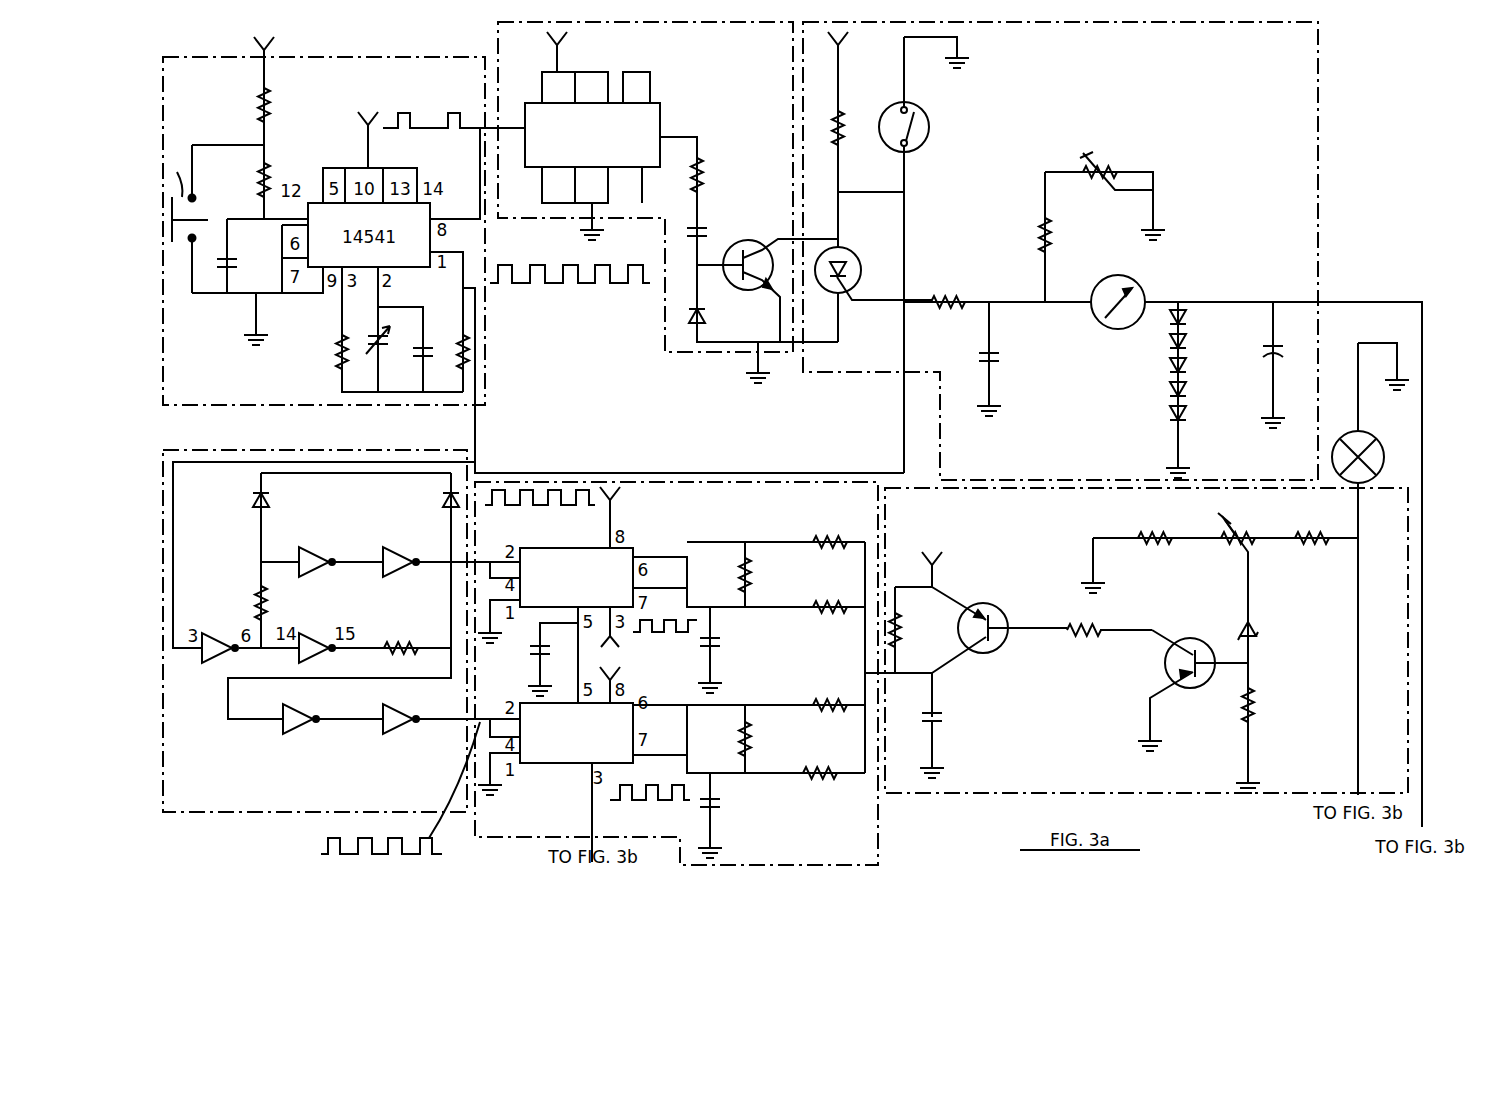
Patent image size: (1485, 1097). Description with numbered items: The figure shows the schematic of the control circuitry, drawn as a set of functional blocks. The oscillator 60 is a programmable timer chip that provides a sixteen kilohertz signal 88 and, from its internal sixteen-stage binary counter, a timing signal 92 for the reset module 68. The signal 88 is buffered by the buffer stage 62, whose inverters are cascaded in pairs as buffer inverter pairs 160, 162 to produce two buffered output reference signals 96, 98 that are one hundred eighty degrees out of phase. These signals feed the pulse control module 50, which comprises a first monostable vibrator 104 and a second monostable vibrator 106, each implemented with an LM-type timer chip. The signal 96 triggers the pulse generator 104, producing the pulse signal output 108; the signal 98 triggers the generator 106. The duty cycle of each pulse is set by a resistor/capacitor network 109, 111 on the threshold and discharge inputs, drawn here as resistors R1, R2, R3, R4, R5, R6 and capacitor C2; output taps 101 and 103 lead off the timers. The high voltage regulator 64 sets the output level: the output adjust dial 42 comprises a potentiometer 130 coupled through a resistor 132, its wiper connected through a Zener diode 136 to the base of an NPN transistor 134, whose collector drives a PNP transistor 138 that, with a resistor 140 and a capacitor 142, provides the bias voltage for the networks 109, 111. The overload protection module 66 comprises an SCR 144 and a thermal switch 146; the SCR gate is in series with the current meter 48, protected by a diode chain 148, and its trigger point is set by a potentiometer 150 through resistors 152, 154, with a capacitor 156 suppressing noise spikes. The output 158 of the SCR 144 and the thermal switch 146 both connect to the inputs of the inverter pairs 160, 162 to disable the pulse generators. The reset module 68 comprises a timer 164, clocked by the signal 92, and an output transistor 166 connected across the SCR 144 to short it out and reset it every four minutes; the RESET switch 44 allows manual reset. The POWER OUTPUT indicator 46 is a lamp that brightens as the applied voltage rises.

The RESET switch 44 is at (214, 219).
The timing signal 92 is at (428, 128).
The timer 164 is at (660, 115).
The output transistor 166 is at (760, 243).
The output of the SCR 158 is at (858, 192).
The SCR 144 is at (852, 258).
The thermal switch 146 is at (917, 150).
The potentiometer 150 is at (1112, 162).
The resistor 152 is at (1050, 247).
The resistor 154 is at (955, 295).
The capacitor 156 is at (992, 330).
The current meter 48 is at (1118, 330).
The diode chain 148 is at (1172, 392).
The overload protection module 66 is at (1318, 125).
The POWER OUTPUT indicator 46 is at (1375, 445).
The oscillator 60 is at (253, 407).
The buffer stage 62 is at (306, 451).
The 16 kHz signal 88 is at (618, 285).
The reset module 68 is at (780, 350).
The pulse control module 50 is at (715, 482).
The buffer inverter pair 160 is at (357, 552).
The buffer inverter pair 162 is at (325, 724).
The buffered output reference signal 98 is at (330, 840).
The buffered output reference signal 96 is at (545, 505).
The resistor/capacitor network 109 is at (657, 546).
The first monostable vibrator 104 is at (648, 588).
The timer output 101 is at (615, 640).
The pulse signal output 108 is at (675, 635).
The resistor/capacitor network 111 is at (641, 712).
The second monostable vibrator 106 is at (560, 765).
The output signal 103 is at (598, 803).
The capacitor C2 is at (718, 808).
The resistor R1 is at (752, 575).
The resistor R2 is at (830, 548).
The resistor R3 is at (835, 613).
The resistor R4 is at (753, 740).
The resistor R5 is at (838, 710).
The resistor R6 is at (830, 780).
The PNP transistor 138 is at (995, 608).
The resistor 140 is at (903, 632).
The capacitor 142 is at (940, 715).
The NPN transistor 134 is at (1172, 675).
The potentiometer 130 is at (1250, 535).
The output adjust dial 42 is at (1236, 553).
The resistor 132 is at (1315, 545).
The Zener diode 136 is at (1262, 628).
The high voltage regulator 64 is at (1255, 795).